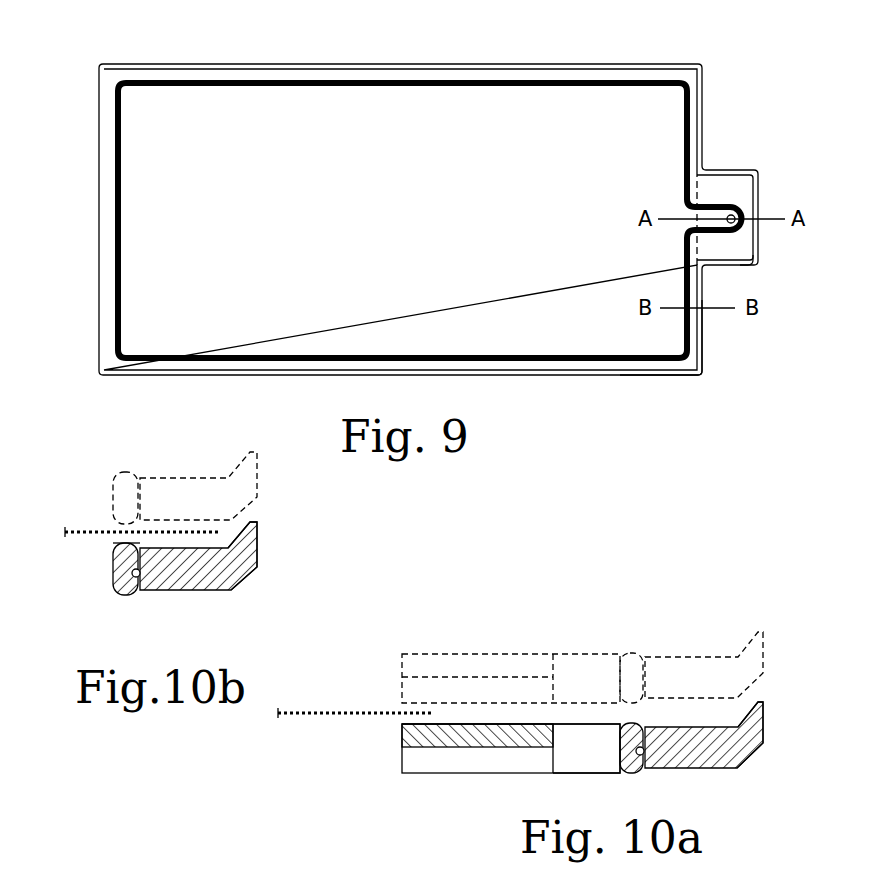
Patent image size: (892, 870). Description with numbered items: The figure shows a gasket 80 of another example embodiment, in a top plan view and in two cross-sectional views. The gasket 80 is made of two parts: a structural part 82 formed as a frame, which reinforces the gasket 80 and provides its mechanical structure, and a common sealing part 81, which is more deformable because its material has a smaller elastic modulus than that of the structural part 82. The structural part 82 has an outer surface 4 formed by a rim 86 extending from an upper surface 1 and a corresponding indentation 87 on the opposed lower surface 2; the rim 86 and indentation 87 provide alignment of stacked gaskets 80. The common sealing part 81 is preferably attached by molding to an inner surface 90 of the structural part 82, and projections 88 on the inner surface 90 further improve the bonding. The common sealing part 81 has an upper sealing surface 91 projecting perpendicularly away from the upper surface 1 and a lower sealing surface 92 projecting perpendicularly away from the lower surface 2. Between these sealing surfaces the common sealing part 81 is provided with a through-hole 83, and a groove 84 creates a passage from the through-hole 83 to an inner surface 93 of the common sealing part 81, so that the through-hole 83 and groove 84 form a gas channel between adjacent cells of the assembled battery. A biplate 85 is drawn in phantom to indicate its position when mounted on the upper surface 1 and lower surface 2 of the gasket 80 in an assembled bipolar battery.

In FIG. 9, the upper surface 1 is at (700, 63).
In FIG. 10B, the upper surface 1 is at (188, 546).
In FIG. 10A, the upper surface 1 is at (713, 725).
In FIG. 10B, the lower surface 2 is at (188, 593).
In FIG. 10A, the lower surface 2 is at (720, 771).
In FIG. 9, the outer surface 4 is at (761, 249).
In FIG. 10B, the outer surface 4 is at (260, 543).
In FIG. 10A, the outer surface 4 is at (766, 722).
In FIG. 9, the gasket 80 is at (176, 24).
In FIG. 9, the common sealing part 81 is at (685, 120).
In FIG. 10B, the common sealing part 81 is at (113, 562).
In FIG. 10A, the common sealing part 81 is at (629, 723).
In FIG. 9, the structural part 82 is at (742, 255).
In FIG. 10B, the structural part 82 is at (232, 591).
In FIG. 10A, the structural part 82 is at (737, 769).
In FIG. 9, the through-hole 83 is at (744, 206).
In FIG. 10A, the through-hole 83 is at (583, 743).
In FIG. 10A, the groove 84 is at (490, 762).
In FIG. 9, the biplate 85 is at (480, 64).
In FIG. 10B, the biplate 85 is at (65, 531).
In FIG. 10A, the biplate 85 is at (365, 712).
In FIG. 9, the rim 86 is at (708, 340).
In FIG. 10B, the rim 86 is at (258, 525).
In FIG. 10A, the rim 86 is at (764, 706).
In FIG. 10B, the indentation 87 is at (258, 568).
In FIG. 10A, the indentation 87 is at (756, 752).
In FIG. 10B, the projections 88 is at (143, 592).
In FIG. 10A, the projections 88 is at (665, 770).
In FIG. 10B, the inner surface 90 is at (131, 577).
In FIG. 10A, the inner surface 90 is at (636, 758).
In FIG. 10B, the upper sealing surface 91 is at (121, 545).
In FIG. 10A, the upper sealing surface 91 is at (500, 722).
In FIG. 10B, the lower sealing surface 92 is at (127, 597).
In FIG. 10A, the lower sealing surface 92 is at (631, 776).
In FIG. 9, the inner surface 93 is at (683, 169).
In FIG. 10A, the inner surface 93 is at (400, 751).